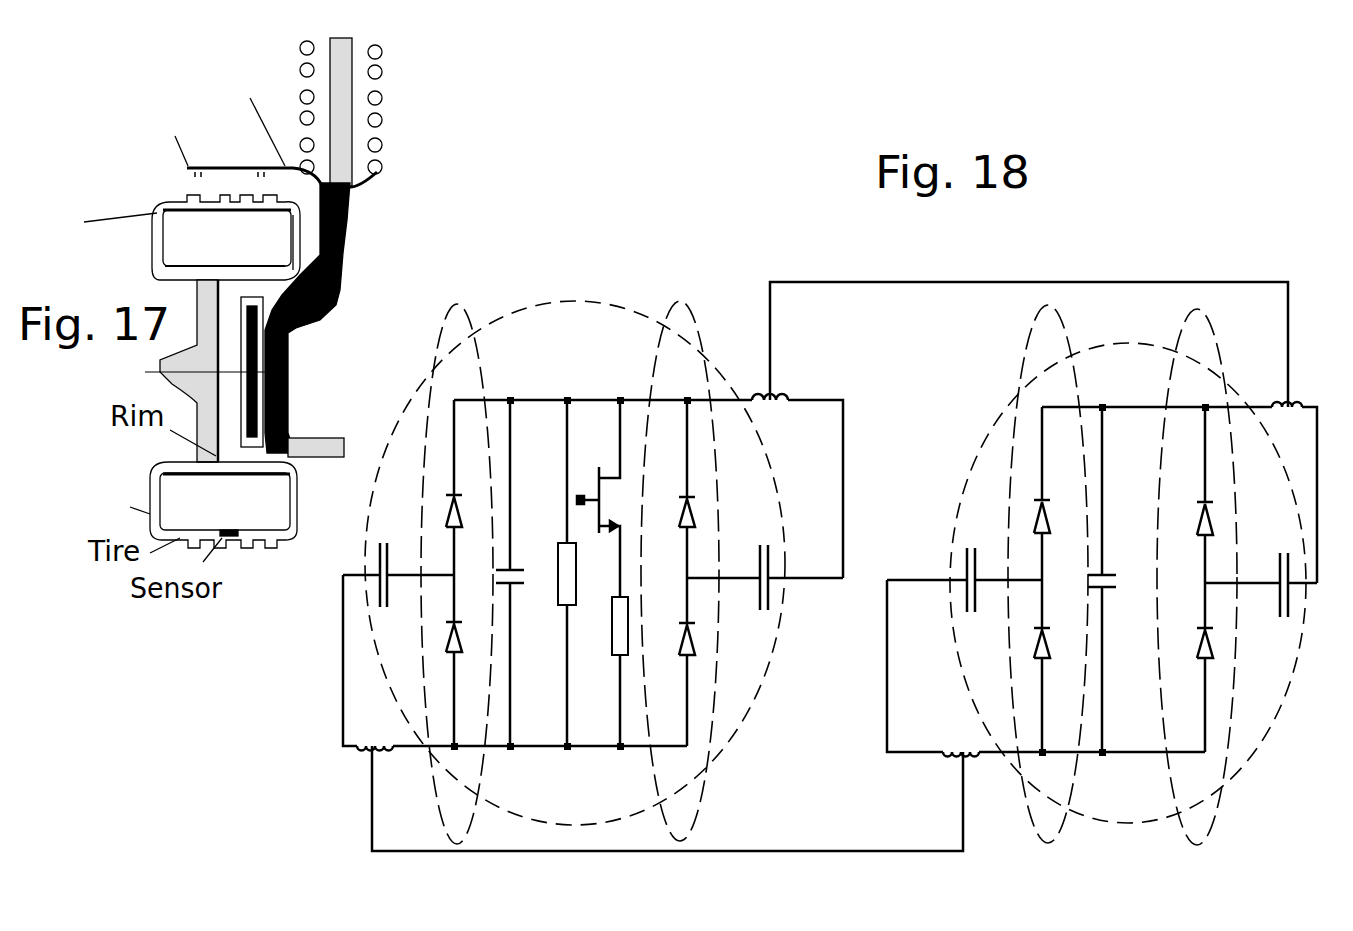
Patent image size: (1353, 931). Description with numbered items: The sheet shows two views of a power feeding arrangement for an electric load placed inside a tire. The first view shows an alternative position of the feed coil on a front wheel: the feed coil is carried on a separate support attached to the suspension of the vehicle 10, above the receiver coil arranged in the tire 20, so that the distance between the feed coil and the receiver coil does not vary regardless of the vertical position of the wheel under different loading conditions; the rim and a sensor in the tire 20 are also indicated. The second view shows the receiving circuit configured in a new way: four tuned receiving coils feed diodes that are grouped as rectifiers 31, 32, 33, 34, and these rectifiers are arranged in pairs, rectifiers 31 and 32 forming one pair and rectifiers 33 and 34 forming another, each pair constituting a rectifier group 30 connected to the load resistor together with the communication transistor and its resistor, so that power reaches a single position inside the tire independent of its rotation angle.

In FIG. 17, the vehicle 10 is at (345, 242).
In FIG. 17, the tire 20 is at (152, 229).
In FIG. 18, the rectifier groups 30 is at (616, 850).
In FIG. 18, the rectifier 31 is at (468, 299).
In FIG. 18, the rectifier 32 is at (700, 302).
In FIG. 18, the rectifier 33 is at (1066, 310).
In FIG. 18, the rectifier 34 is at (1212, 308).